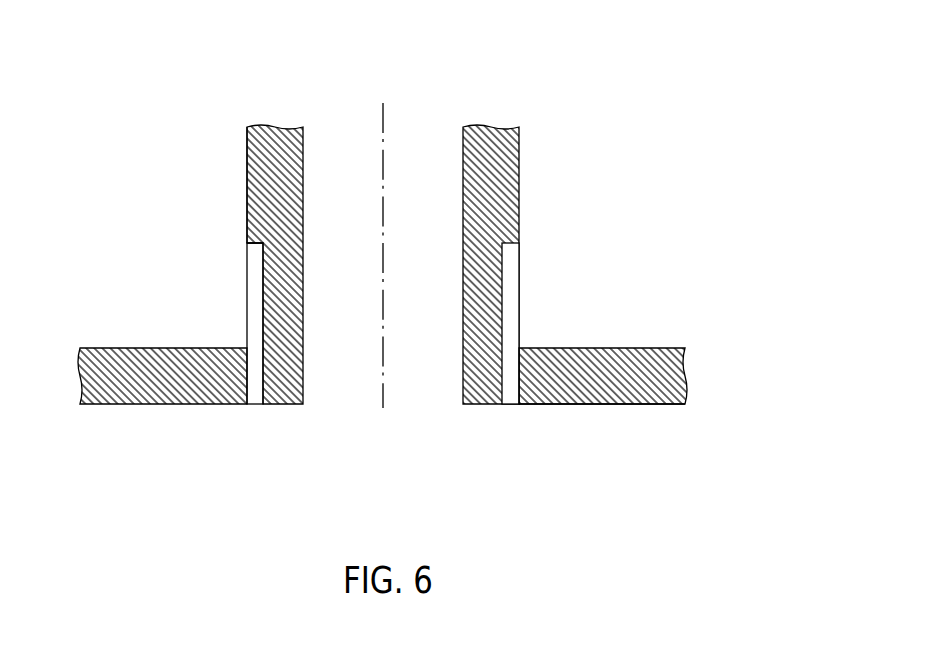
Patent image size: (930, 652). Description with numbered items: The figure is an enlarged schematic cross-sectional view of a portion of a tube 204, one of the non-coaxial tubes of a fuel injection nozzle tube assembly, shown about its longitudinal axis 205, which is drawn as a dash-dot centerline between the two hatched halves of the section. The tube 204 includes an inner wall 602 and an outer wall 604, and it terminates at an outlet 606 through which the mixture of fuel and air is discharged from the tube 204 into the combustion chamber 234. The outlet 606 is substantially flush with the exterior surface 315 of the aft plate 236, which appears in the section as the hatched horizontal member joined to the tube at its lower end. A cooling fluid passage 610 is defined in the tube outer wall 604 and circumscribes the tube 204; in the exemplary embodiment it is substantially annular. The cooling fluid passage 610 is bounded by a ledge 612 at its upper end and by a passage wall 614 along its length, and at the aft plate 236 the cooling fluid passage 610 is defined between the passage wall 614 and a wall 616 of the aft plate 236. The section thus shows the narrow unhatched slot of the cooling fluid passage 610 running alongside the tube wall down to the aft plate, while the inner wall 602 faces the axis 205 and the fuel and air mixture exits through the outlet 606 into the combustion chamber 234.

The tube 204 is at (518, 54).
The longitudinal axis 205 is at (381, 110).
The combustion chamber 234 is at (472, 452).
The aft plate 236 is at (662, 405).
The exterior surface 315 is at (583, 405).
The inner wall 602 is at (303, 213).
The outer wall 604 is at (247, 170).
The outlet 606 is at (351, 420).
The cooling fluid passage 610 is at (541, 268).
The ledge 612 is at (255, 245).
The passage wall 614 is at (263, 318).
The wall 616 is at (255, 404).